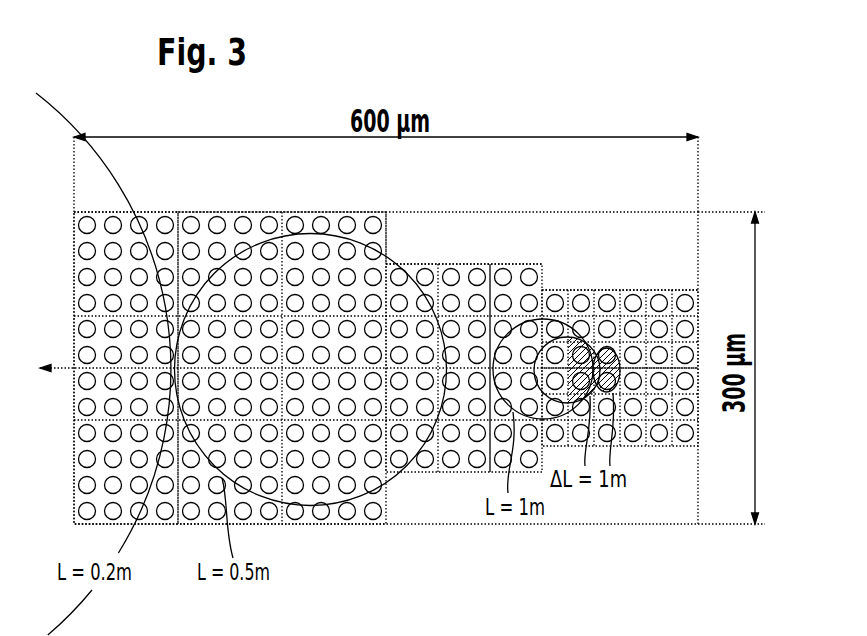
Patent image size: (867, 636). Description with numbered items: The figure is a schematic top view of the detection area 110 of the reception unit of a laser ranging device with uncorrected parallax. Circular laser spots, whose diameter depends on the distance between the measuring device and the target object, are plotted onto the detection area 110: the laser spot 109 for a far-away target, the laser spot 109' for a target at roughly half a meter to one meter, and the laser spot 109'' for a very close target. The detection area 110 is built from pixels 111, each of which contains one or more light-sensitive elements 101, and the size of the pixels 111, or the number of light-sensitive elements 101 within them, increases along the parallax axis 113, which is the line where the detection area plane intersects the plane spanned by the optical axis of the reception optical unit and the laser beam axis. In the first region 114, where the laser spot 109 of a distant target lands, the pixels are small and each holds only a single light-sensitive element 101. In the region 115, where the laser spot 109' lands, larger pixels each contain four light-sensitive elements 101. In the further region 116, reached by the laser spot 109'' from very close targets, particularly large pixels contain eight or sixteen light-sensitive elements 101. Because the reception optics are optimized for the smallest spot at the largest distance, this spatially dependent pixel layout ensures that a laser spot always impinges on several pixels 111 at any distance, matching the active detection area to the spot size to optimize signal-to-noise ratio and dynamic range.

The light-sensitive element 101 is at (217, 217).
The laser spot 109 is at (596, 323).
The laser spot 109' is at (311, 329).
The laser spot 109'' is at (103, 348).
The detection area 110 is at (306, 551).
The pixel 111 is at (571, 280).
The parallax axis 113 is at (98, 368).
The first region 114 is at (656, 463).
The region 115 is at (444, 506).
The further region 116 is at (172, 551).